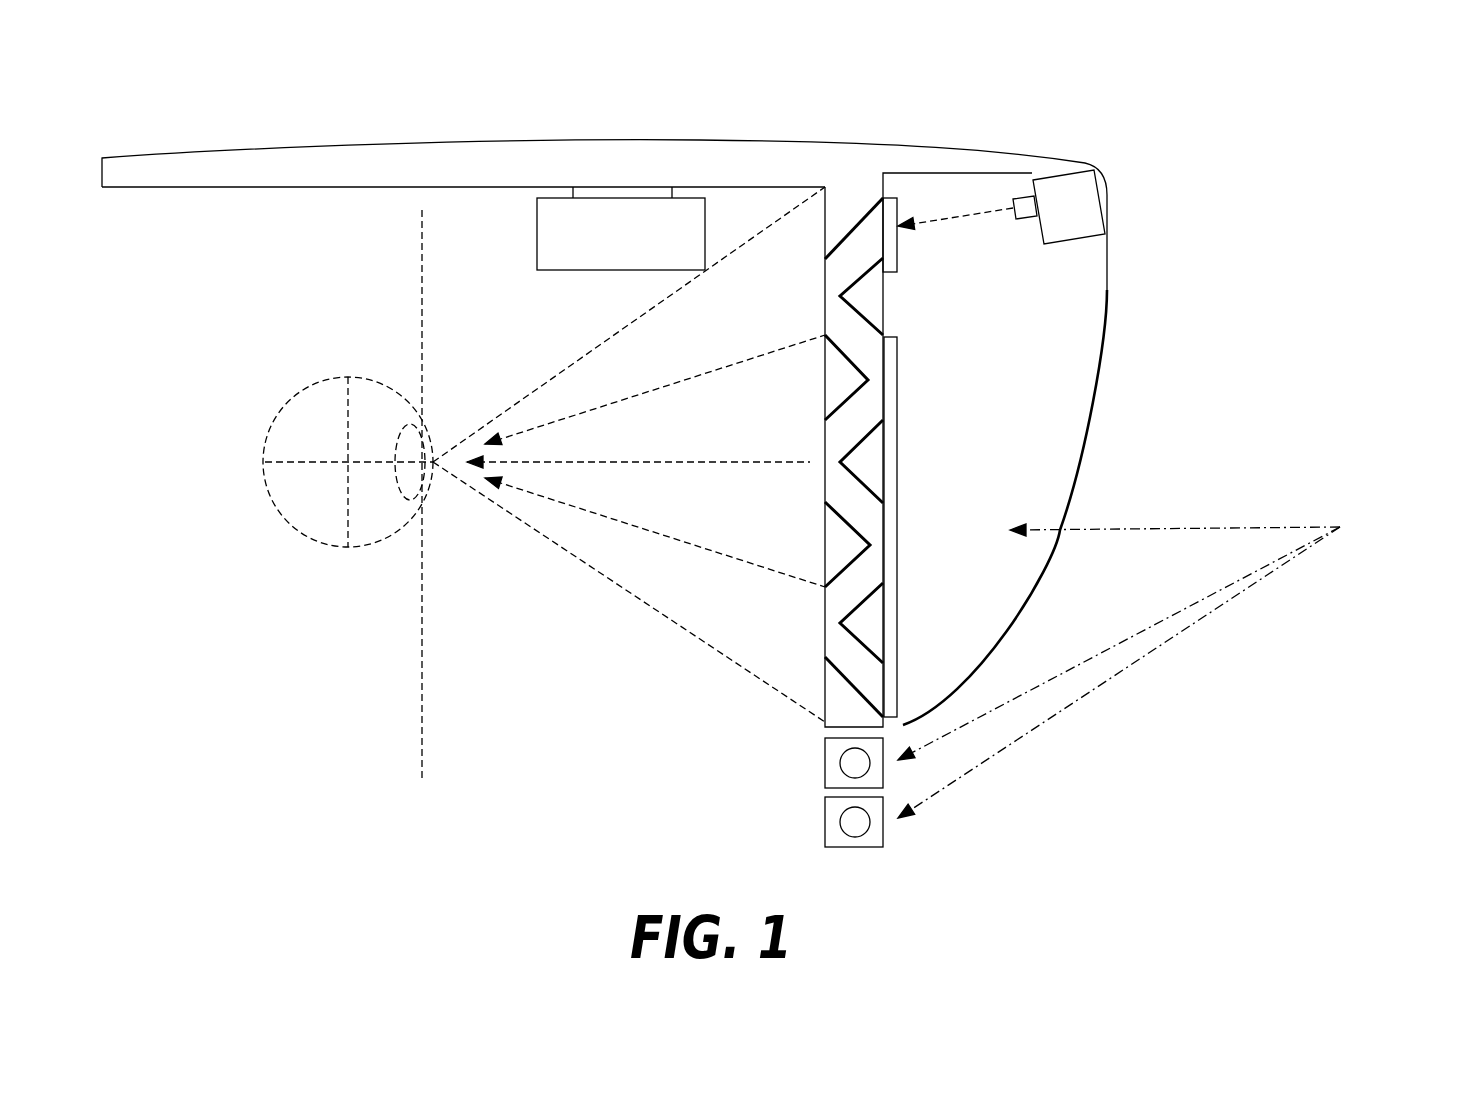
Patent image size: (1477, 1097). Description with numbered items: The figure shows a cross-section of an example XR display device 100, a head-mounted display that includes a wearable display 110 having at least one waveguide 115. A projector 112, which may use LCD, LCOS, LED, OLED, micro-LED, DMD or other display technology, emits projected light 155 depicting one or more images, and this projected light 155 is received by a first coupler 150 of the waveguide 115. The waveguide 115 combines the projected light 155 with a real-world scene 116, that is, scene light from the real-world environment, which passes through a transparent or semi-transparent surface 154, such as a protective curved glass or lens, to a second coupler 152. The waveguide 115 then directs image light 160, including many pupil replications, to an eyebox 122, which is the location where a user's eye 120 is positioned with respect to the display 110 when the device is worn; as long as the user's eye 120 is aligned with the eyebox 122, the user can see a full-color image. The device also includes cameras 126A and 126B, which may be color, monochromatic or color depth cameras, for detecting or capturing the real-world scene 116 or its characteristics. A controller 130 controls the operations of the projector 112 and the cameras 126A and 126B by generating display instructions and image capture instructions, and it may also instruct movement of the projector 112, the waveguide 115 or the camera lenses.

The XR display device 100 is at (618, 80).
The wearable display 110 is at (827, 697).
The projector 112 is at (1068, 197).
The waveguide 115 is at (860, 407).
The real-world scene 116 is at (1142, 530).
The user's eye 120 is at (268, 485).
The eyebox 122 is at (423, 697).
The camera 126A is at (825, 770).
The camera 126B is at (857, 847).
The controller 130 is at (621, 228).
The first coupler 150 is at (960, 267).
The second coupler 152 is at (898, 528).
The transparent surface 154 is at (1110, 287).
The projected light 155 is at (962, 217).
The image light 160 is at (629, 454).